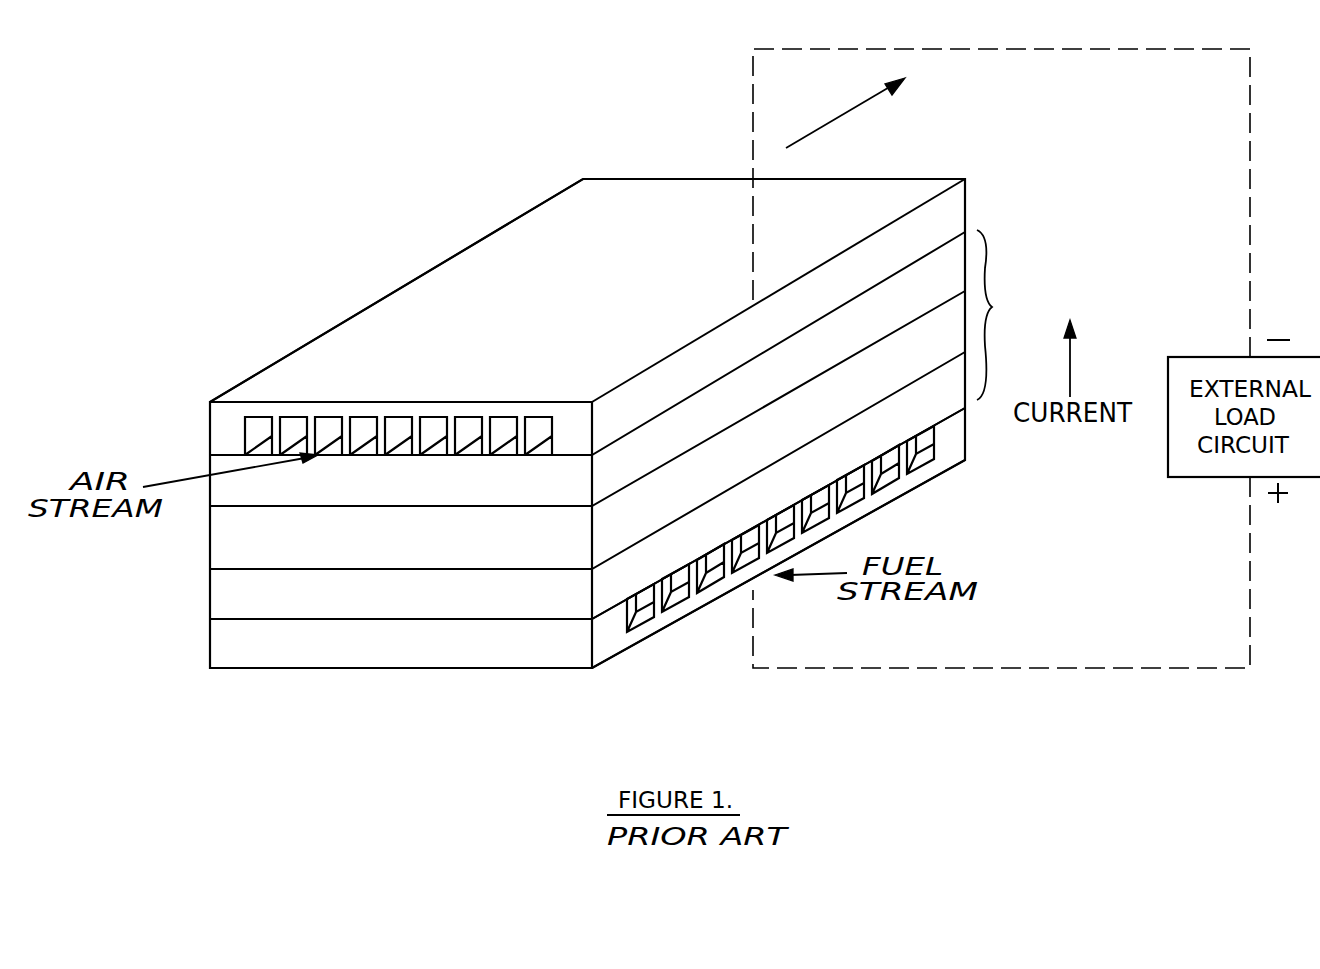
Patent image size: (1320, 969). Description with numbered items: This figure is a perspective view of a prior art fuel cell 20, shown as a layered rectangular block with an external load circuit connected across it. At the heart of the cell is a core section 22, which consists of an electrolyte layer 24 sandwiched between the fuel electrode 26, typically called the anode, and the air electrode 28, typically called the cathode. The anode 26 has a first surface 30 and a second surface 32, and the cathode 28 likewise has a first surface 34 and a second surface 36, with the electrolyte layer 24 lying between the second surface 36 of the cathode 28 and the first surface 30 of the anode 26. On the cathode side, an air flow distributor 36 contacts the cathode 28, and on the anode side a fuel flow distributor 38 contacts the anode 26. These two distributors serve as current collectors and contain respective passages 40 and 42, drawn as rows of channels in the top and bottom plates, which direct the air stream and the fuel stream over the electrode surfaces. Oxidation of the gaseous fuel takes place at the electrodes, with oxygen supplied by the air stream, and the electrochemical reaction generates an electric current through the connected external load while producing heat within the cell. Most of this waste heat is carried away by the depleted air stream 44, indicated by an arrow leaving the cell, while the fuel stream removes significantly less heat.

The fuel cell 20 is at (336, 202).
The core section 22 is at (991, 307).
The electrolyte layer 24 is at (672, 498).
The fuel electrode 26 is at (207, 600).
The air electrode 28 is at (210, 461).
The first surface 30 is at (228, 572).
The second surface 32 is at (228, 620).
The first surface 34 is at (228, 450).
The air flow distributor 36 is at (536, 220).
The fuel flow distributor 38 is at (239, 653).
The passages 40 is at (397, 427).
The passages 42 is at (853, 496).
The depleted air stream 44 is at (850, 108).